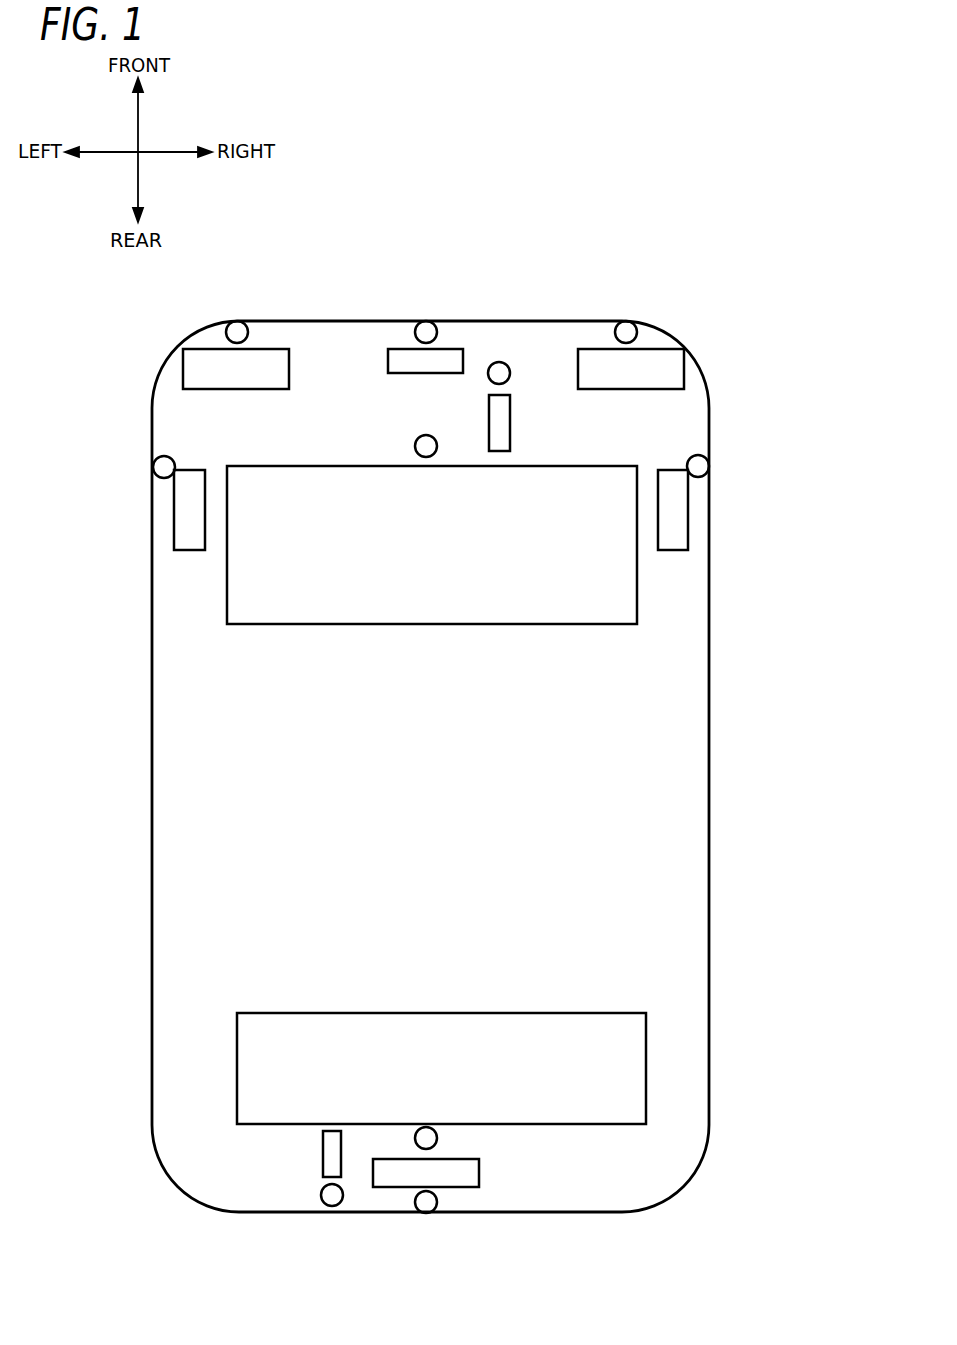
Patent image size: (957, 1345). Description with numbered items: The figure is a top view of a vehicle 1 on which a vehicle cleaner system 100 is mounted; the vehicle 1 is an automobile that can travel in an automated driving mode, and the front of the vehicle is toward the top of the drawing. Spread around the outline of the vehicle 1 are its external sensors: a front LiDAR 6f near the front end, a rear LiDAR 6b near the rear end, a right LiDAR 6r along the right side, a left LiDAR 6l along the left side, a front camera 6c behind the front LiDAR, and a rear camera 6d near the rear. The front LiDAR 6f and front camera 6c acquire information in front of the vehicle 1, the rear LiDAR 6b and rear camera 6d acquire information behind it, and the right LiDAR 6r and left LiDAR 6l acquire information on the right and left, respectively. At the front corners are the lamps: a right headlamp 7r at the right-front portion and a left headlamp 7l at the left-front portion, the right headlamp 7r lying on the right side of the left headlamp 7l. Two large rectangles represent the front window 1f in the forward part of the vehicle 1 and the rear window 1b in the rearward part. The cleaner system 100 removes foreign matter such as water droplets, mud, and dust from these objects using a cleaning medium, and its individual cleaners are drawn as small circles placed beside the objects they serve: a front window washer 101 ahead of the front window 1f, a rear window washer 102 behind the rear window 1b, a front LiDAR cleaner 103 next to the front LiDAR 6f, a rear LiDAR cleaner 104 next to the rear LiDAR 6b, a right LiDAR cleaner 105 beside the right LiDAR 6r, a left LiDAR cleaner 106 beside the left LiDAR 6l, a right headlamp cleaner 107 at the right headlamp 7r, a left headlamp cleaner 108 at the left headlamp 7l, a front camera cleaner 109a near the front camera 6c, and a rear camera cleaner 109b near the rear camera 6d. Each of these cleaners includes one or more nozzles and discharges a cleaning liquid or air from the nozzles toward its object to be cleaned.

The vehicle 1 is at (623, 138).
The vehicle cleaner system 100 is at (502, 225).
The front window washer 101 is at (425, 440).
The rear window washer 102 is at (438, 1137).
The front LiDAR cleaner 103 is at (426, 322).
The rear LiDAR cleaner 104 is at (427, 1213).
The right LiDAR cleaner 105 is at (700, 463).
The left LiDAR cleaner 106 is at (165, 465).
The right headlamp cleaner 107 is at (626, 321).
The left headlamp cleaner 108 is at (237, 321).
The front camera cleaner 109a is at (500, 365).
The rear camera cleaner 109b is at (322, 1200).
The front LiDAR 6f is at (455, 357).
The rear LiDAR 6b is at (385, 1175).
The left LiDAR 6l is at (183, 503).
The right LiDAR 6r is at (682, 510).
The front camera 6c is at (505, 422).
The rear camera 6d is at (328, 1153).
The left headlamp 7l is at (197, 367).
The right headlamp 7r is at (660, 363).
The front window 1f is at (627, 583).
The rear window 1b is at (633, 1060).